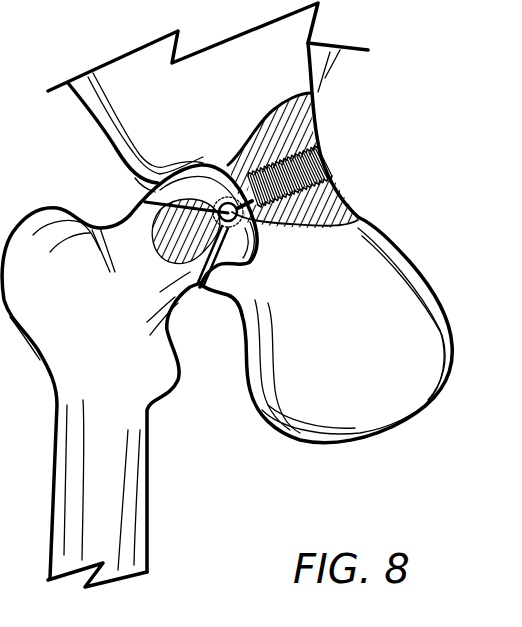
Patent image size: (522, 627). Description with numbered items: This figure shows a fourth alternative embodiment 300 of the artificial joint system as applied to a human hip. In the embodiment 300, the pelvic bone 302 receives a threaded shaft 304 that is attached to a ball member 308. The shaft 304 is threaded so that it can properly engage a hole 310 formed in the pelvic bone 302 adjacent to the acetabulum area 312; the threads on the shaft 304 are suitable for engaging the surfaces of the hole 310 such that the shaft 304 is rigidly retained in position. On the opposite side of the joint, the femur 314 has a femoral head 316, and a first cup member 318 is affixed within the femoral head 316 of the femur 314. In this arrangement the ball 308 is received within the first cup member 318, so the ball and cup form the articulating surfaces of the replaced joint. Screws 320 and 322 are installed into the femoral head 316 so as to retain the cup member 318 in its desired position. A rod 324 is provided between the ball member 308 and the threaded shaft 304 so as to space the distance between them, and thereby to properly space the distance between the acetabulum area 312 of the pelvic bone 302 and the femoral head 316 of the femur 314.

The artificial joint system embodiment 300 is at (388, 182).
The pelvic bone 302 is at (328, 65).
The threaded shaft 304 is at (321, 163).
The ball member 308 is at (222, 192).
The hole 310 is at (318, 189).
The acetabulum area 312 is at (260, 244).
The femur 314 is at (138, 492).
The femoral head 316 is at (243, 267).
The first cup member 318 is at (145, 218).
The screw 320 is at (150, 202).
The screw 322 is at (200, 262).
The rod 324 is at (240, 200).